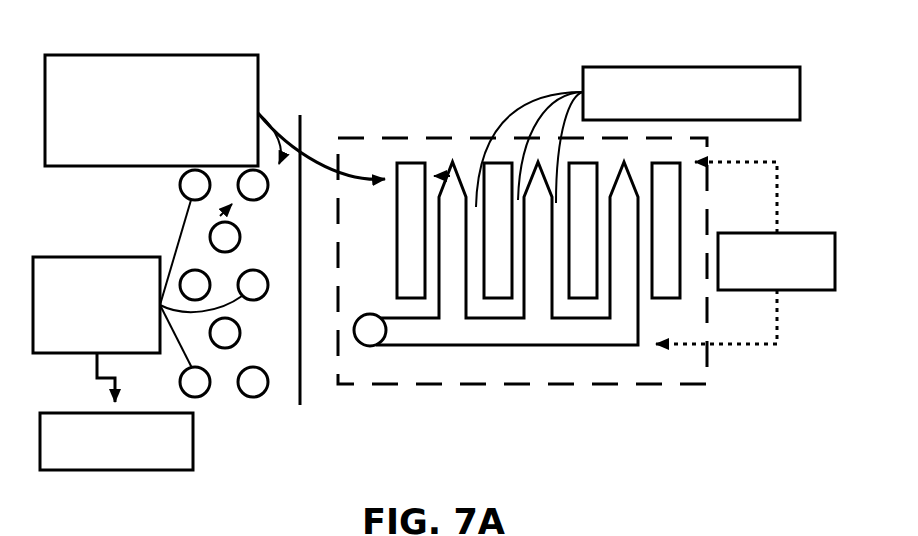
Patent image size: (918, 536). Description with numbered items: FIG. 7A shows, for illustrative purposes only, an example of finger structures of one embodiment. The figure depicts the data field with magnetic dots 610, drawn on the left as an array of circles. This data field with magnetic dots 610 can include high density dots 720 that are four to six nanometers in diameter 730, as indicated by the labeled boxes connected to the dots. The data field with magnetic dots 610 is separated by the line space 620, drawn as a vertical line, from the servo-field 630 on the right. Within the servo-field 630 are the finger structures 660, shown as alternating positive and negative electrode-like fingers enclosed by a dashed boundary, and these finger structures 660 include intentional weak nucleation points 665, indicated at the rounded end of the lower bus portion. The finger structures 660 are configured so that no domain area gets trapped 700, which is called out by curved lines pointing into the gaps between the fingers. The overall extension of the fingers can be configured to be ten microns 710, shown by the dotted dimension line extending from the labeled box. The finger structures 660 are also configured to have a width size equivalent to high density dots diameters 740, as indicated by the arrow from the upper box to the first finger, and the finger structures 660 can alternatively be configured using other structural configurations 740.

The data field with magnetic dots 610 is at (173, 220).
The line space 620 is at (322, 273).
The servo-field 630 is at (408, 150).
The finger structures 660 is at (707, 370).
The intentional weak nucleation points 665 is at (371, 332).
The no domain area gets trapped 700 is at (792, 102).
The 10 microns 710 is at (816, 243).
The high density dots 720 is at (150, 270).
The 4 to 6 nm in diameter 730 is at (182, 457).
The width size equivalent to high density dots diameters 740 is at (248, 83).